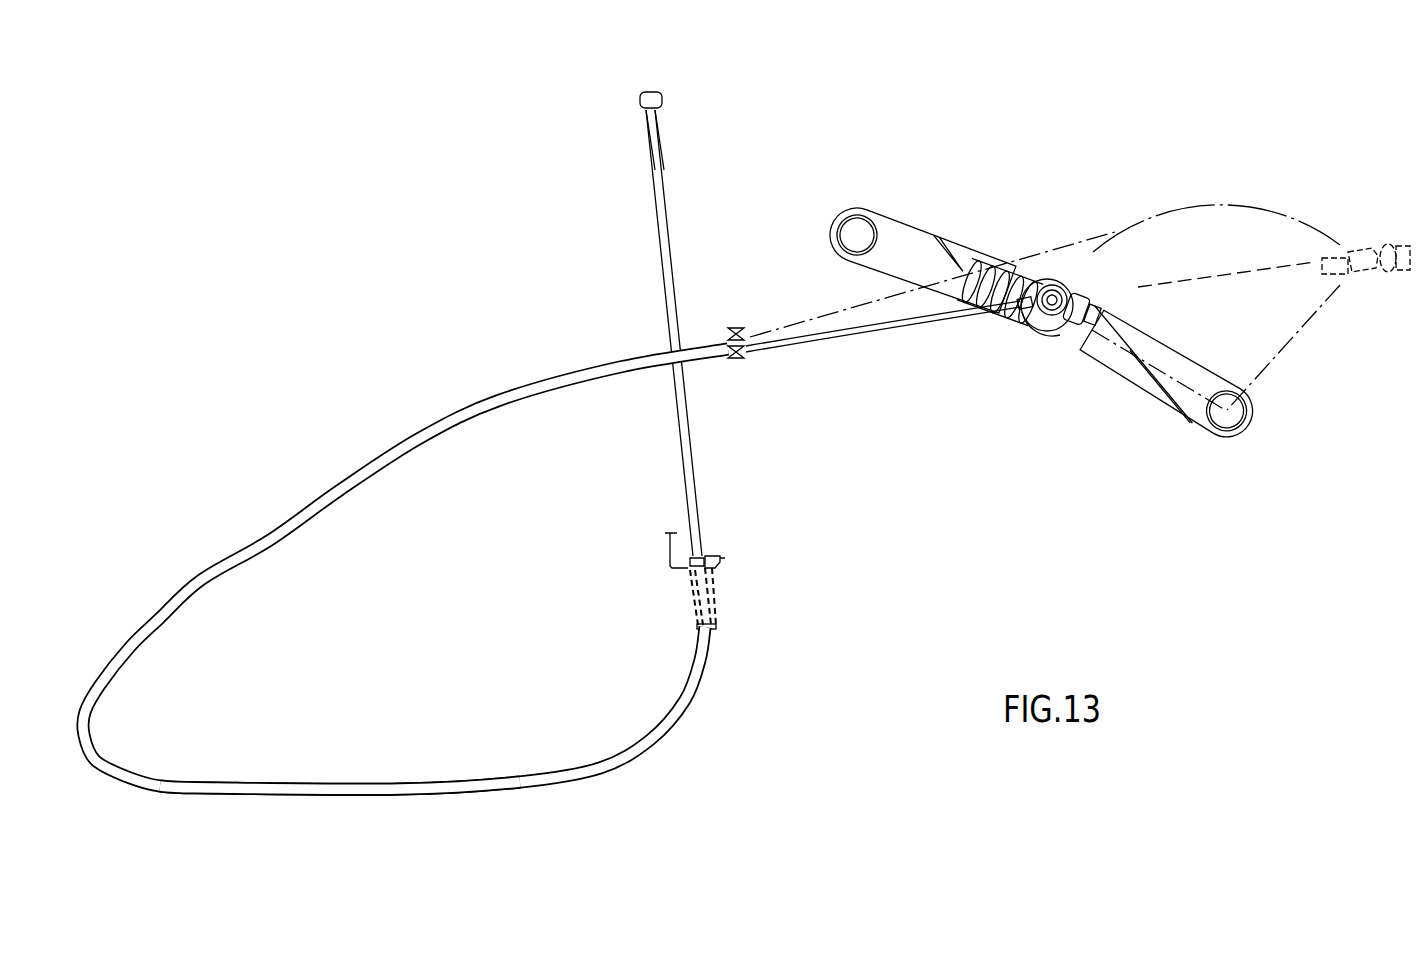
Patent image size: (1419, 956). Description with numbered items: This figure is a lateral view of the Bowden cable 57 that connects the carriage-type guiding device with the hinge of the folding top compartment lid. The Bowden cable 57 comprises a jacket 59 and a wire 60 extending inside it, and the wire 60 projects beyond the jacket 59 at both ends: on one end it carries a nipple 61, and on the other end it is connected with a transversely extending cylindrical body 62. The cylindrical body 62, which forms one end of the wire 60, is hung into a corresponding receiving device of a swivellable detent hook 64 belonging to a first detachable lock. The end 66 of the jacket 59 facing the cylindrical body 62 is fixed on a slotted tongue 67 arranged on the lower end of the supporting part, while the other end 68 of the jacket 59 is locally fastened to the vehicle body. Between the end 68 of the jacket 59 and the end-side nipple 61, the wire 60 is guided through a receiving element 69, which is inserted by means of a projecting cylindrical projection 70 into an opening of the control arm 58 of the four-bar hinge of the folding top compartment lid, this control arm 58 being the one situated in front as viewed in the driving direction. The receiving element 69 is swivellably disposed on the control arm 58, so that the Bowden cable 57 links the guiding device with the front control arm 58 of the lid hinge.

The Bowden cable 57 is at (436, 617).
The control arm 58 is at (1113, 383).
The jacket 59 is at (397, 797).
The wire 60 is at (688, 443).
The nipple 61 is at (1098, 288).
The cylindrical body 62 is at (637, 89).
The detent hook 64 is at (735, 107).
The end of the jacket 66 is at (722, 575).
The slotted tongue 67 is at (660, 552).
The other end of the jacket 68 is at (732, 328).
The receiving element 69 is at (1056, 284).
The cylindrical projection 70 is at (1050, 306).